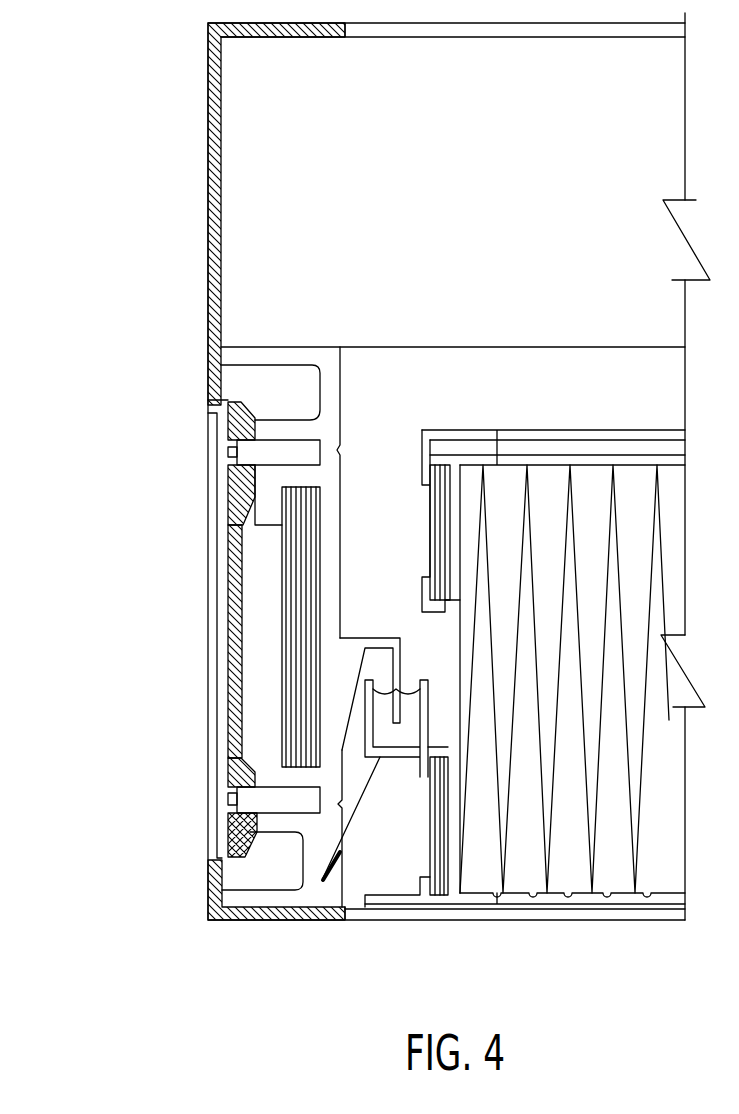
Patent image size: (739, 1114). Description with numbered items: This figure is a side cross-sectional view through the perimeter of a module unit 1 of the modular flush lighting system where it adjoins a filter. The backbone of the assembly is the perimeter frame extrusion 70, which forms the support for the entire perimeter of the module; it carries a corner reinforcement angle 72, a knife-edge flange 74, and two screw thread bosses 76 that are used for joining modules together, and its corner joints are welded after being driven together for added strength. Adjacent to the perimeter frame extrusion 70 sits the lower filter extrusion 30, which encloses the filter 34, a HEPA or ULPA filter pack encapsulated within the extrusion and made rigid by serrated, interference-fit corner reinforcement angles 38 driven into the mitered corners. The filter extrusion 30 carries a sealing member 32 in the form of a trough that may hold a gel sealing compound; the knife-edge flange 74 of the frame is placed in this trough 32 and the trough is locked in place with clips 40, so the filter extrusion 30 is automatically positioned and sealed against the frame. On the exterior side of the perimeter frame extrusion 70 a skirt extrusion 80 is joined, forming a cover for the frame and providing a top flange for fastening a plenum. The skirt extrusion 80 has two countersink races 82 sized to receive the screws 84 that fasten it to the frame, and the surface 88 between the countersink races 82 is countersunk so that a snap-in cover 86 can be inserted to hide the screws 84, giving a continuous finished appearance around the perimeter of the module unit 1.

The module unit 1 is at (85, 900).
The lower filter extrusion 30 is at (453, 430).
The sealing member 32 is at (403, 757).
The filter 34 is at (585, 487).
The corner reinforcement angle 38 is at (428, 515).
The clips 40 is at (350, 818).
The perimeter frame extrusion 70 is at (342, 372).
The corner reinforcement angle 72 is at (300, 627).
The knife-edge flange 74 is at (390, 640).
The screw thread bosses 76 is at (280, 468).
The skirt extrusion 80 is at (208, 323).
The countersink races 82 is at (292, 452).
The screws 84 is at (230, 803).
The snap-in cover 86 is at (208, 543).
The surface 88 is at (228, 660).